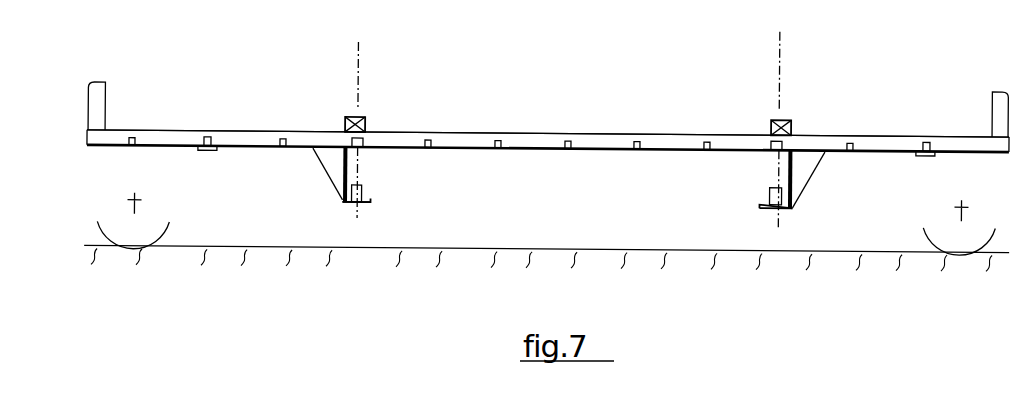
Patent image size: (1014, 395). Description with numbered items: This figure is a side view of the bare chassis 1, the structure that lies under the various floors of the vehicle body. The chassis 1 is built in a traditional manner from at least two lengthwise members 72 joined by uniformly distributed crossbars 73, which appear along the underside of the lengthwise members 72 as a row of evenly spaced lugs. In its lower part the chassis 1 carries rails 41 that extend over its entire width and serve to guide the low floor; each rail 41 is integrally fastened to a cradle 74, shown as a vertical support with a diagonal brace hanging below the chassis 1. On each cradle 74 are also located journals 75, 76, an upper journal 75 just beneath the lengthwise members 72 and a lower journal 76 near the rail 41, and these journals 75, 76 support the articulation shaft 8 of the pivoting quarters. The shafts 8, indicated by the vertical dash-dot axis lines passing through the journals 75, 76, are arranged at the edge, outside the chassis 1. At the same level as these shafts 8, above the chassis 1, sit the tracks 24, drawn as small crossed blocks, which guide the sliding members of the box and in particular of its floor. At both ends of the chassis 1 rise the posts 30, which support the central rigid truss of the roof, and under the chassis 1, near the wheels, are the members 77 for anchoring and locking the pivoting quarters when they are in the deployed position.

The chassis 1 is at (597, 122).
The articulation shaft 8 is at (357, 56).
The track 24 is at (345, 120).
The post 30 is at (107, 96).
The rail 41 is at (367, 204).
The lengthwise member 72 is at (477, 141).
The crossbar 73 is at (568, 149).
The cradle 74 is at (343, 203).
The journal 75 is at (363, 142).
The journal 76 is at (365, 194).
The anchoring and locking member 77 is at (208, 154).